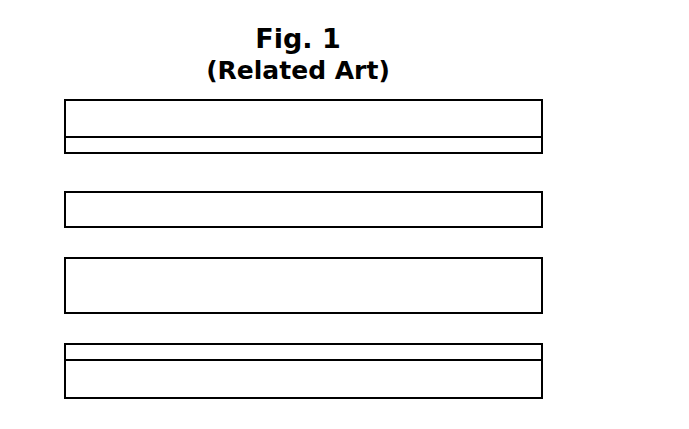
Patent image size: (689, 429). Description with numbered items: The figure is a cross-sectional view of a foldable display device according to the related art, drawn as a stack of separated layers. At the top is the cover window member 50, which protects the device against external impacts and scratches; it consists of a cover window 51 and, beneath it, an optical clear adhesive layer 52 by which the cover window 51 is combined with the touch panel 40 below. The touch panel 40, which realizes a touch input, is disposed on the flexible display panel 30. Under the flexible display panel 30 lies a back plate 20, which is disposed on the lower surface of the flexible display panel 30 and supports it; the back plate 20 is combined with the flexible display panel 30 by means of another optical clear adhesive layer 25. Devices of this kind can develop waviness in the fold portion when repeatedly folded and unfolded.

The cover window member 50 is at (340, 127).
The cover window 51 is at (543, 118).
The optical clear adhesive layer 52 is at (323, 145).
The touch panel 40 is at (543, 210).
The flexible display panel 30 is at (543, 288).
The optical clear adhesive layer 25 is at (543, 352).
The back plate 20 is at (543, 382).